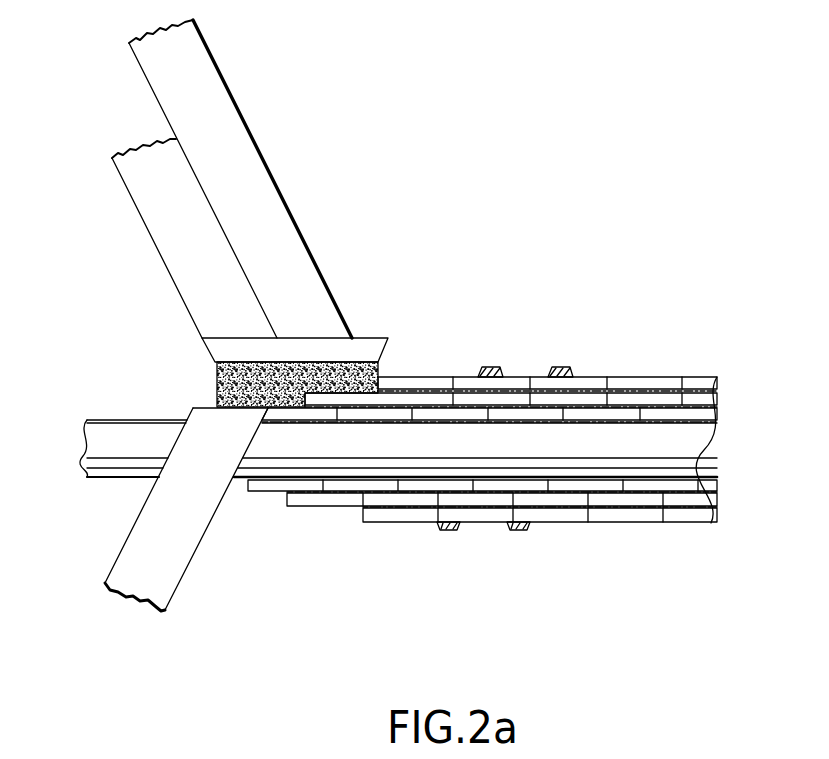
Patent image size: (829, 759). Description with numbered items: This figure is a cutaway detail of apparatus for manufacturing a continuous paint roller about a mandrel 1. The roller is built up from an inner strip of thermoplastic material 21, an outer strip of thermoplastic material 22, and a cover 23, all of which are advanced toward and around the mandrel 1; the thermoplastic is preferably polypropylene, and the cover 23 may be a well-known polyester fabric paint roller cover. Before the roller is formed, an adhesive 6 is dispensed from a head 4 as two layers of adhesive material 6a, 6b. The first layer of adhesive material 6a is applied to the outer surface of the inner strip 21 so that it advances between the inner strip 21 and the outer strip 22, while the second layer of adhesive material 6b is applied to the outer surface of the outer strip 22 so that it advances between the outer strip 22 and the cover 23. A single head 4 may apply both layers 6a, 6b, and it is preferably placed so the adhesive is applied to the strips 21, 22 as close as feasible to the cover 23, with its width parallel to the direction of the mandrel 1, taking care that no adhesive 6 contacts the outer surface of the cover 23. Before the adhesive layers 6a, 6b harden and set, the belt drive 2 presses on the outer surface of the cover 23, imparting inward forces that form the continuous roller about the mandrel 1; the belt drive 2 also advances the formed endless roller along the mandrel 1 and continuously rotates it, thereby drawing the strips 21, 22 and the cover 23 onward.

The mandrel 1 is at (683, 447).
The belt drive 2 is at (566, 358).
The head 4 is at (353, 340).
The adhesive 6 is at (238, 348).
The first layer of adhesive material 6a is at (238, 378).
The second layer of adhesive material 6b is at (237, 383).
The inner strip of thermoplastic material 21 is at (158, 568).
The outer strip of thermoplastic material 22 is at (138, 185).
The cover 23 is at (240, 160).